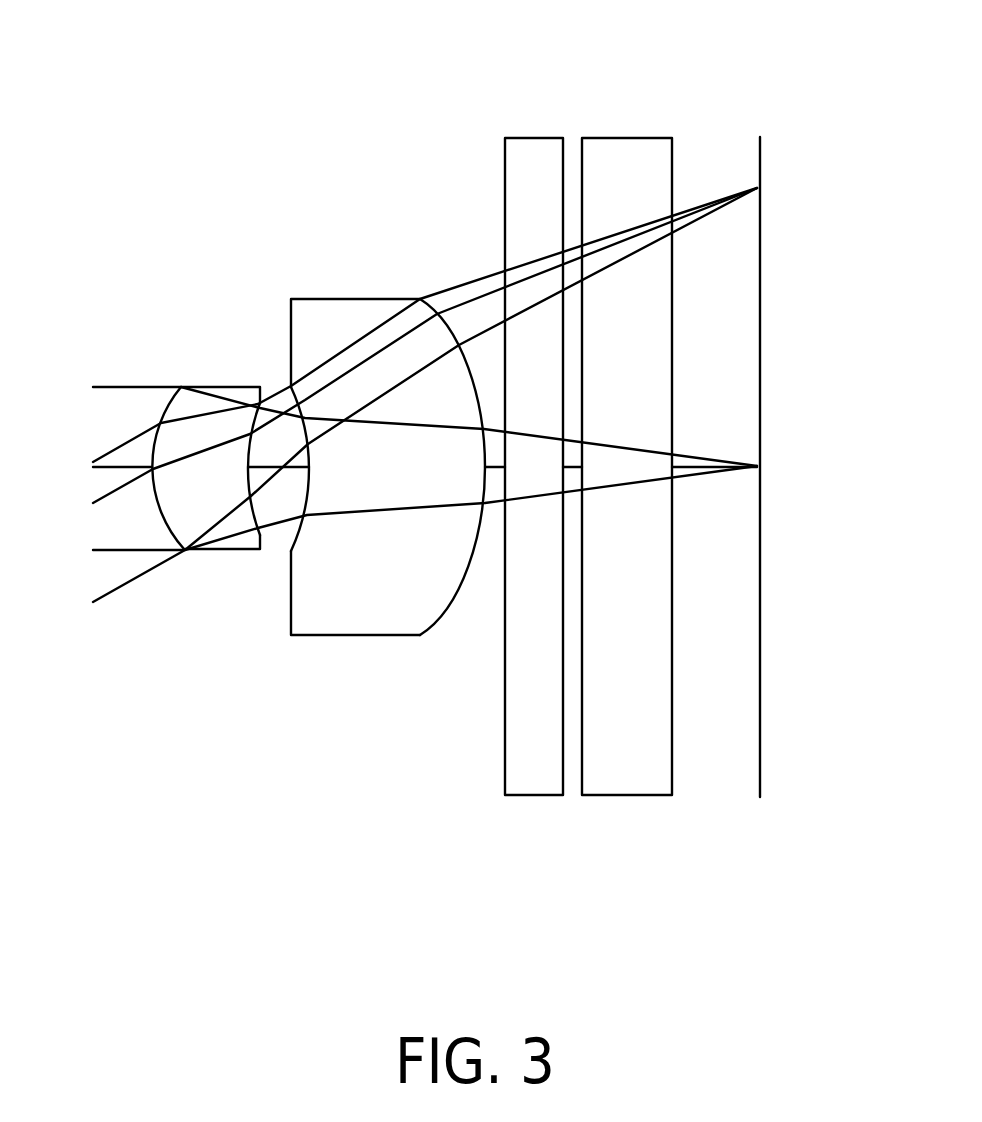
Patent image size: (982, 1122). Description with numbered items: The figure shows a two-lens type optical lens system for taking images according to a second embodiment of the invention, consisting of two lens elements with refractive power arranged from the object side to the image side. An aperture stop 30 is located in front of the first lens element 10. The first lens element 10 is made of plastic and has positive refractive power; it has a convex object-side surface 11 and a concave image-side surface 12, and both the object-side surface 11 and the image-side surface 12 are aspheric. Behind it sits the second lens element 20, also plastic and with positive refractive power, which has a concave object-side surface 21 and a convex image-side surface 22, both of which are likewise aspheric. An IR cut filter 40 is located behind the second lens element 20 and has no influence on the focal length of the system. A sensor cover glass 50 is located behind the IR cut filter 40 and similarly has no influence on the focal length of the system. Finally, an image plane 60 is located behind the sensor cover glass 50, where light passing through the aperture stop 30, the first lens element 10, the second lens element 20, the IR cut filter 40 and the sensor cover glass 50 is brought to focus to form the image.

The first lens element 10 is at (184, 460).
The object-side surface 11 is at (163, 554).
The image-side surface 12 is at (250, 534).
The second lens element 20 is at (388, 470).
The object-side surface 21 is at (300, 562).
The image-side surface 22 is at (451, 620).
The aperture stop 30 is at (176, 371).
The IR cut filter 40 is at (537, 138).
The sensor cover glass 50 is at (631, 137).
The image plane 60 is at (771, 148).